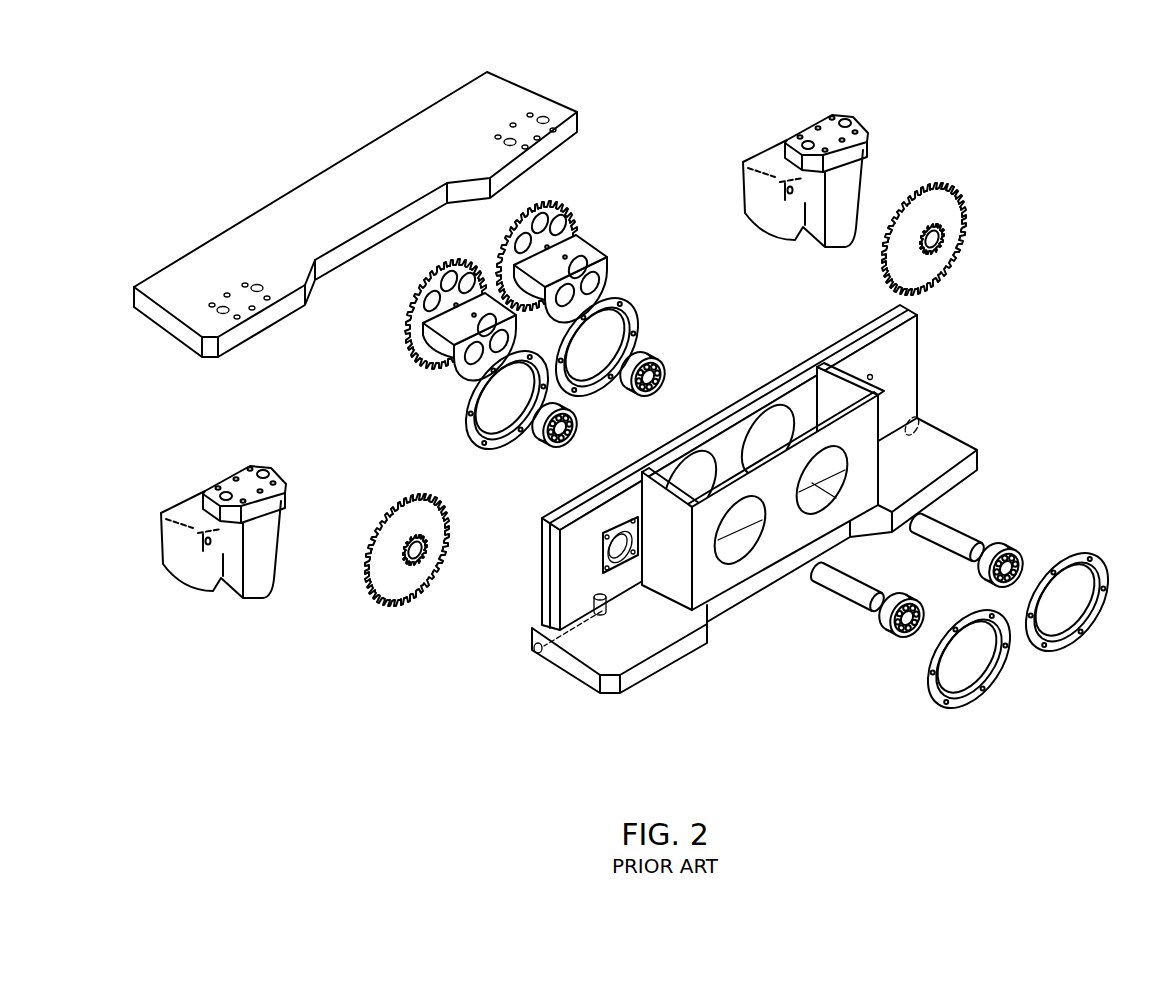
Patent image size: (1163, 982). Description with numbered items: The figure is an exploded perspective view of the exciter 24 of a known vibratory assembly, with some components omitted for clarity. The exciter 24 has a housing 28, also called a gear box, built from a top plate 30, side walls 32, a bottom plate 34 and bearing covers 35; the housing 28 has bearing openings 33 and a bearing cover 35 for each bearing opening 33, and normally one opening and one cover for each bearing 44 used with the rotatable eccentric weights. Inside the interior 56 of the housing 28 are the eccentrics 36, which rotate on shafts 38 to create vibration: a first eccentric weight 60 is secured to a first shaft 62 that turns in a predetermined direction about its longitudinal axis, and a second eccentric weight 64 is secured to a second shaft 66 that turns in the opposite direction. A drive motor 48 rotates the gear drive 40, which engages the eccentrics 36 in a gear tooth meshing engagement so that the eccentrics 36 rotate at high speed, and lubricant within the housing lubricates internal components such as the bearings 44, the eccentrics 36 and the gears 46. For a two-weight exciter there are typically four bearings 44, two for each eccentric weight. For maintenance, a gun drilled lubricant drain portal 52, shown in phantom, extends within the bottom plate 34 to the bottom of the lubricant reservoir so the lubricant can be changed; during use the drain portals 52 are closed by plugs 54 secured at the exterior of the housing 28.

The exciter 24 is at (1016, 346).
The housing 28 is at (729, 502).
The top plate 30 is at (497, 97).
The side walls 32 is at (820, 328).
The bearing openings 33 is at (684, 466).
The bottom plate 34 is at (631, 680).
The bearing covers 35 is at (634, 328).
The eccentrics 36 is at (503, 291).
The shafts 38 is at (898, 556).
The gear drive 40 is at (952, 238).
The bearings 44 is at (648, 360).
The gears 46 is at (543, 200).
The drive motor 48 is at (843, 190).
The lubricant drain portal 52 is at (574, 655).
The plugs 54 is at (538, 651).
The interior 56 is at (721, 448).
The first eccentric weight 60 is at (460, 352).
The first shaft 62 is at (832, 579).
The second eccentric weight 64 is at (607, 257).
The second shaft 66 is at (928, 523).